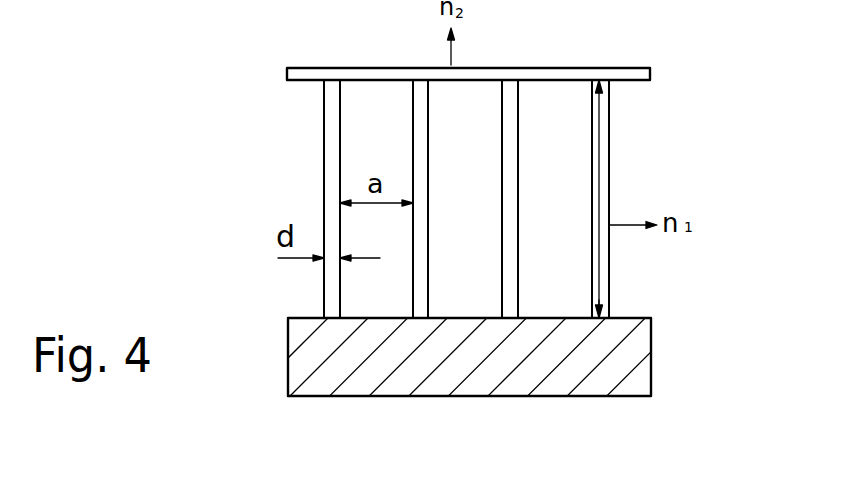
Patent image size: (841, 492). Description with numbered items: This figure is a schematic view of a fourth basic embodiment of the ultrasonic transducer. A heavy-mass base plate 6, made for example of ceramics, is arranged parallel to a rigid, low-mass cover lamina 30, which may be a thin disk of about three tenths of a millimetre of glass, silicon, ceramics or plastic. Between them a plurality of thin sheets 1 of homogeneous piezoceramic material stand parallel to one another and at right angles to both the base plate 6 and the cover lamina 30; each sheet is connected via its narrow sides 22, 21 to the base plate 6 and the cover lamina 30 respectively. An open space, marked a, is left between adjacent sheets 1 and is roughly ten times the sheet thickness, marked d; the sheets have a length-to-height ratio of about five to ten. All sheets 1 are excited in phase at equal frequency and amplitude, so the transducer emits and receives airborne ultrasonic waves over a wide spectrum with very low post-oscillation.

The cover lamina 30 is at (622, 73).
The narrow side of sheet 21 is at (601, 92).
The sheets 1 is at (333, 242).
The narrow side of sheet 22 is at (600, 310).
The base plate 6 is at (618, 356).